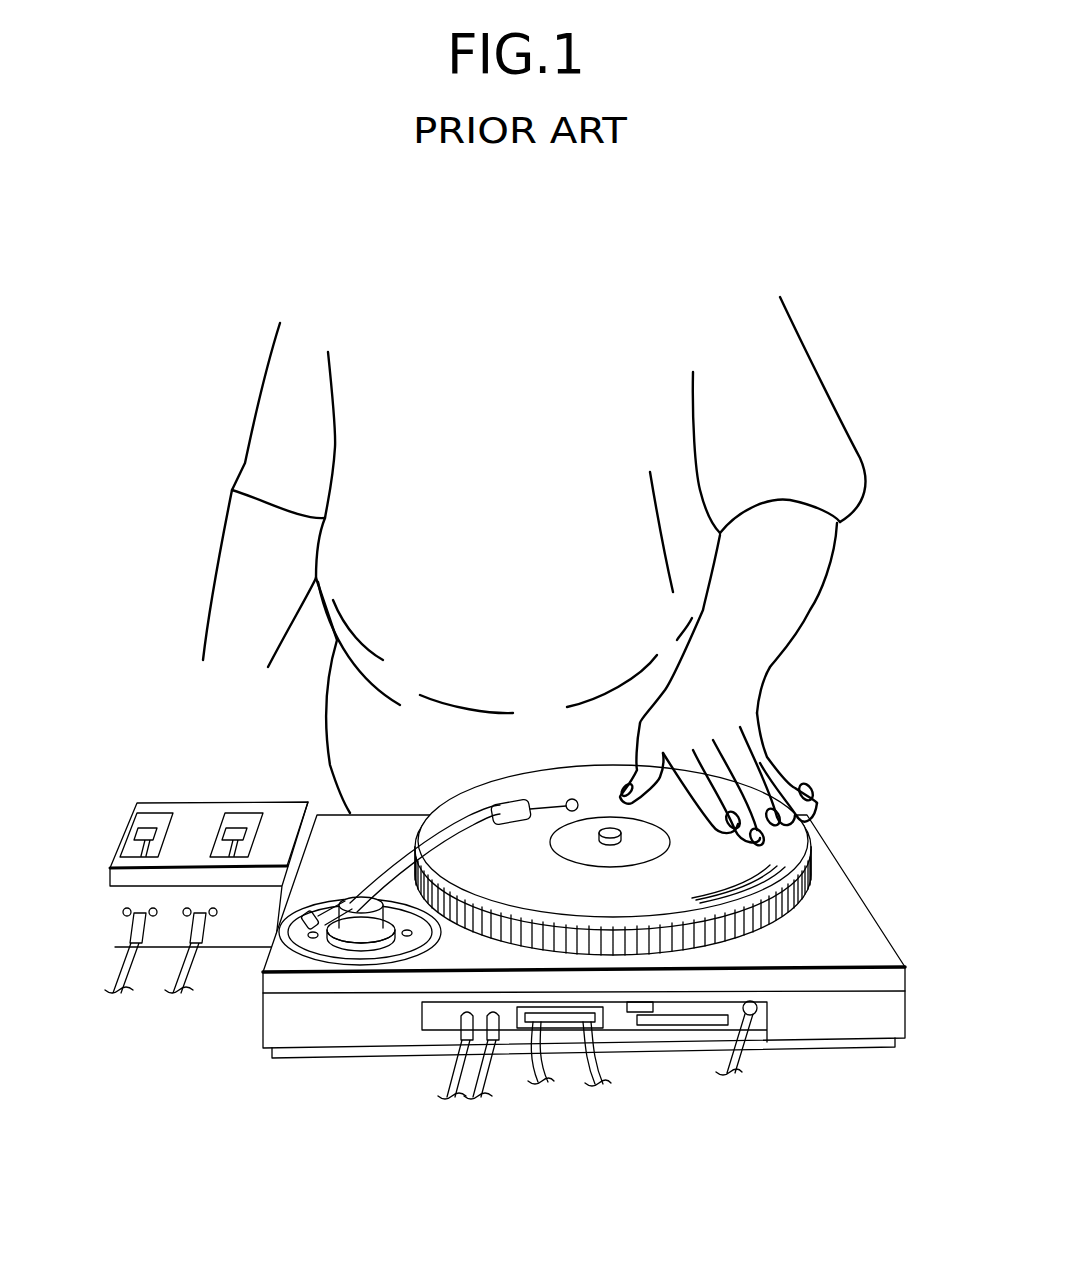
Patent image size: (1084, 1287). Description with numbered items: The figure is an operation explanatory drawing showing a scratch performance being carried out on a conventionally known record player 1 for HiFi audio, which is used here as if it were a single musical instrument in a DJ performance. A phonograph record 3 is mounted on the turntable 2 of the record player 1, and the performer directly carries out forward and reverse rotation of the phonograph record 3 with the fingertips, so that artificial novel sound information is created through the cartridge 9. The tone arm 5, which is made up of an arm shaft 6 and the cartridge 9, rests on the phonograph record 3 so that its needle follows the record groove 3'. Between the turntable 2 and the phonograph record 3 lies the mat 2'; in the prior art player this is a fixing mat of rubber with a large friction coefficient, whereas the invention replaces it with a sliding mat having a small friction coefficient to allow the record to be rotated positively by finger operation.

The record player 1 is at (890, 1015).
The turntable 2 is at (613, 969).
The sliding mat 2' is at (577, 989).
The phonograph record 3 is at (613, 953).
The record groove 3' is at (803, 858).
The tone arm 5 is at (398, 855).
The arm shaft 6 is at (477, 820).
The cartridge 9 is at (573, 798).